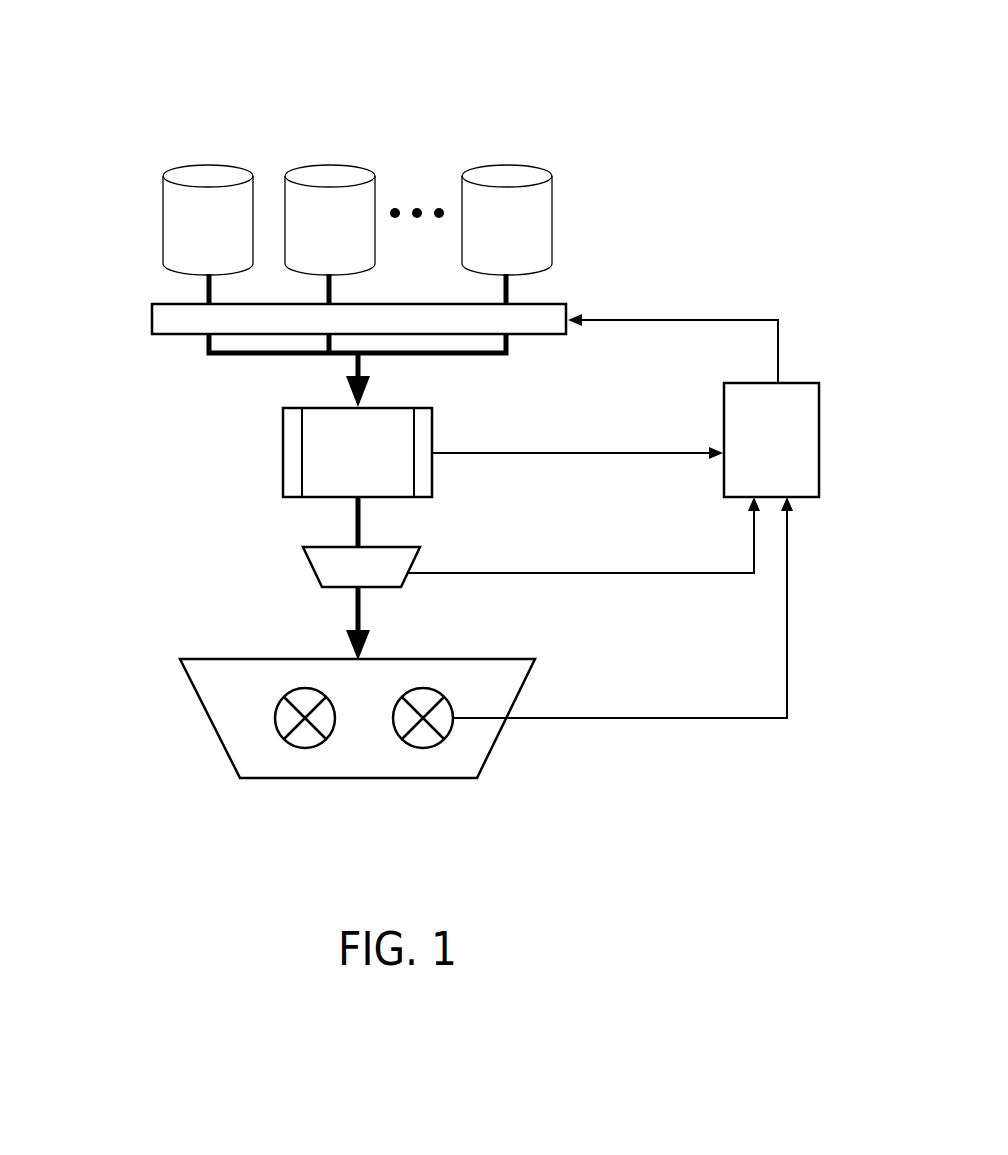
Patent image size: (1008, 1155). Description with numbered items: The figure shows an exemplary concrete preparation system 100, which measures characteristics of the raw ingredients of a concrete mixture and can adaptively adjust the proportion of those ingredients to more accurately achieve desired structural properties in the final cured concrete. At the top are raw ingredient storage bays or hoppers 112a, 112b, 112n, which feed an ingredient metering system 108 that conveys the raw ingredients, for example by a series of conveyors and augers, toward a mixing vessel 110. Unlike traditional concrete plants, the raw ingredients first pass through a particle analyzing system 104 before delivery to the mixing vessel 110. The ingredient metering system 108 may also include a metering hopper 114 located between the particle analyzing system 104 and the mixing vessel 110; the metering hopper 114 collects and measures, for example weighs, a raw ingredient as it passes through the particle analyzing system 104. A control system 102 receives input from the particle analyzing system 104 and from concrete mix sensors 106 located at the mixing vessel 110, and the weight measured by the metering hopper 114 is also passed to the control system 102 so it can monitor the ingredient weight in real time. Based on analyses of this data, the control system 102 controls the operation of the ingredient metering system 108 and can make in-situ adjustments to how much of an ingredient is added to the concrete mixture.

The concrete preparation system 100 is at (109, 68).
The control system 102 is at (807, 383).
The particle analyzing system 104 is at (283, 437).
The concrete mix sensors 106 is at (425, 750).
The ingredient metering system 108 is at (573, 299).
The mixing vessel 110 is at (218, 735).
The raw ingredient storage bay 112a is at (209, 165).
The raw ingredient storage bay 112b is at (353, 165).
The raw ingredient storage bay 112n is at (532, 165).
The metering hopper 114 is at (313, 570).